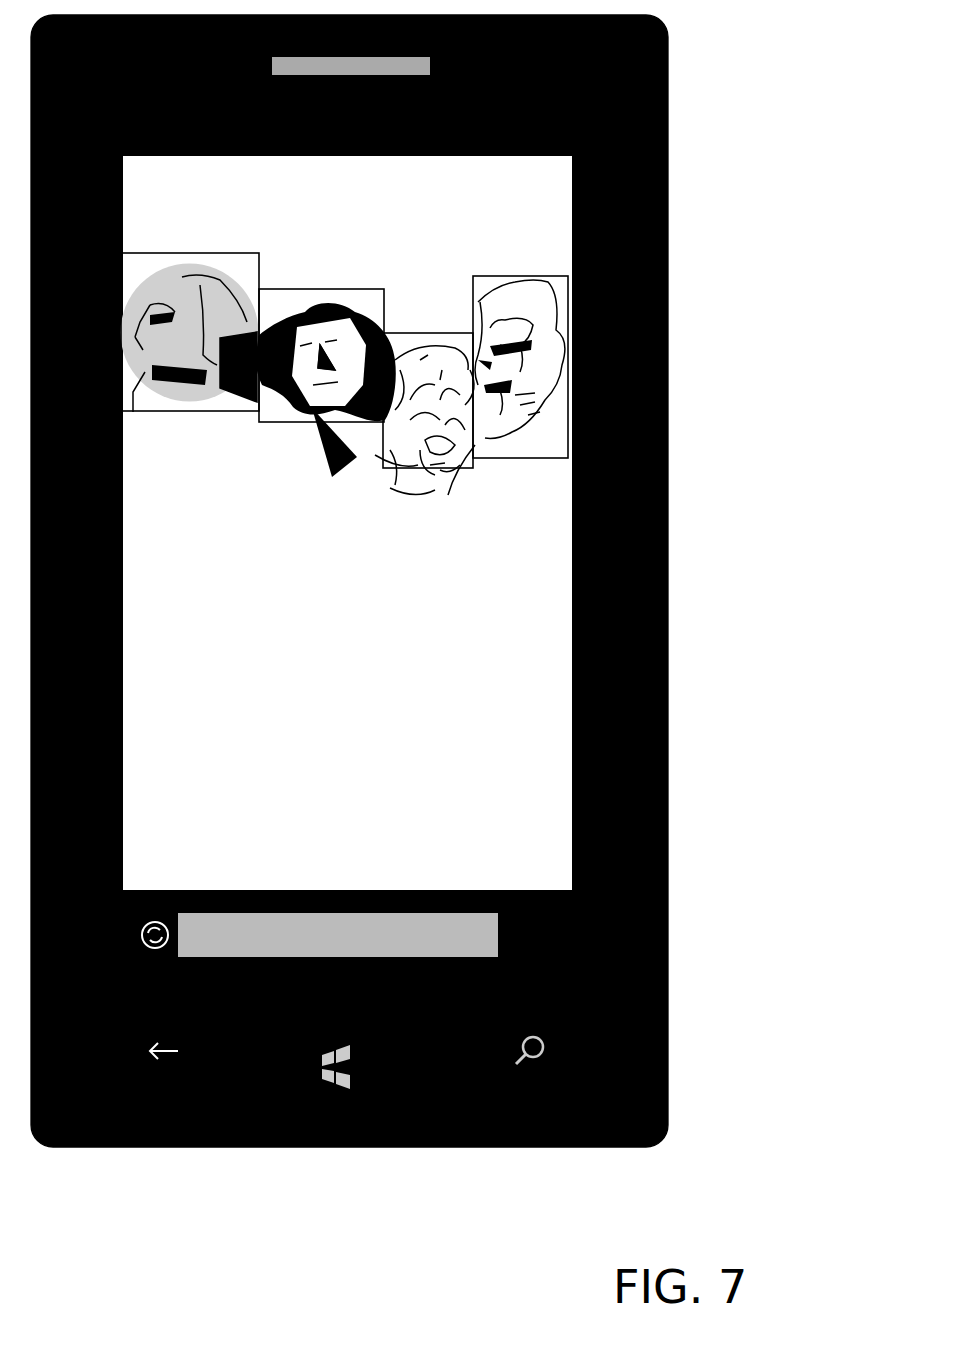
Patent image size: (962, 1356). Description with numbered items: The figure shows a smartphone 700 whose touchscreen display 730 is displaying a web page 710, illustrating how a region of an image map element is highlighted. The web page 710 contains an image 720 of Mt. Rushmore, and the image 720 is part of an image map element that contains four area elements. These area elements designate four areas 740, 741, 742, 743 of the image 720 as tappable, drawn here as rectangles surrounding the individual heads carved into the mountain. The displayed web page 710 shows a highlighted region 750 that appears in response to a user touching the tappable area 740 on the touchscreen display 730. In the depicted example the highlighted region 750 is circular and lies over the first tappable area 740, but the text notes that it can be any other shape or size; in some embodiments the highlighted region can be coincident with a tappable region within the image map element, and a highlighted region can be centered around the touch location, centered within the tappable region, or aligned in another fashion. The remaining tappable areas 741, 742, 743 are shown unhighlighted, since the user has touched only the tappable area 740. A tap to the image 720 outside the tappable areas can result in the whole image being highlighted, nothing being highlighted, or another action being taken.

The smartphone 700 is at (736, 49).
The web page 710 is at (478, 226).
The image 720 is at (233, 444).
The touchscreen display 730 is at (364, 202).
The tappable area 740 is at (216, 252).
The tappable area 741 is at (337, 288).
The tappable area 742 is at (394, 332).
The tappable area 743 is at (560, 276).
The highlighted region 750 is at (183, 397).